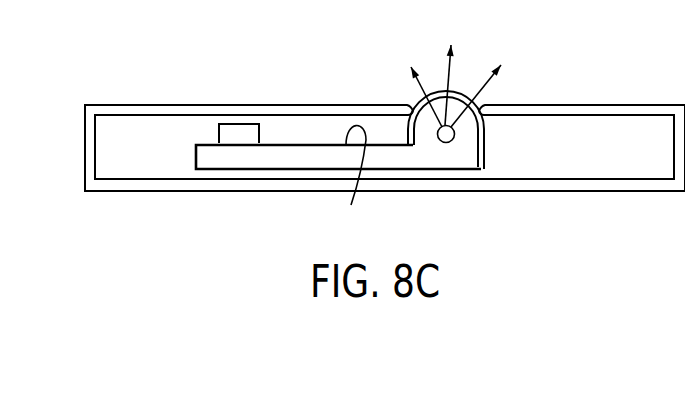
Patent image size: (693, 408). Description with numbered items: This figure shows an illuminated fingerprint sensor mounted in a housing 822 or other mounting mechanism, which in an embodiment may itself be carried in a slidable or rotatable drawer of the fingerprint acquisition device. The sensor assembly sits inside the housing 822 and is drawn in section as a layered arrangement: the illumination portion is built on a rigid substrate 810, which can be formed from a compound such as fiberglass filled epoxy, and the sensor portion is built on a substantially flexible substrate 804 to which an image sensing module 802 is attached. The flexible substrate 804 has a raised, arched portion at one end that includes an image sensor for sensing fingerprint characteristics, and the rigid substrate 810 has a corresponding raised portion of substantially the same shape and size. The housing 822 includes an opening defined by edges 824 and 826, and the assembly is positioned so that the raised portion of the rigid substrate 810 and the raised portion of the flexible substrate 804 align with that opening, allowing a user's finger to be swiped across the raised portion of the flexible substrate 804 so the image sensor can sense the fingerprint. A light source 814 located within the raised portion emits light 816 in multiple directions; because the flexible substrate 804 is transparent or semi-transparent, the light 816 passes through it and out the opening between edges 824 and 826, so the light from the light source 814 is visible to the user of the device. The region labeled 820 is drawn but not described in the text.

The image sensing module 802 is at (256, 132).
The flexible substrate 804 is at (352, 179).
The rigid substrate 810 is at (217, 155).
The light source 814 is at (443, 140).
The light 816 is at (478, 88).
The housing 820 is at (592, 157).
The housing 822 is at (587, 112).
The edge 824 is at (412, 103).
The edge 826 is at (476, 102).